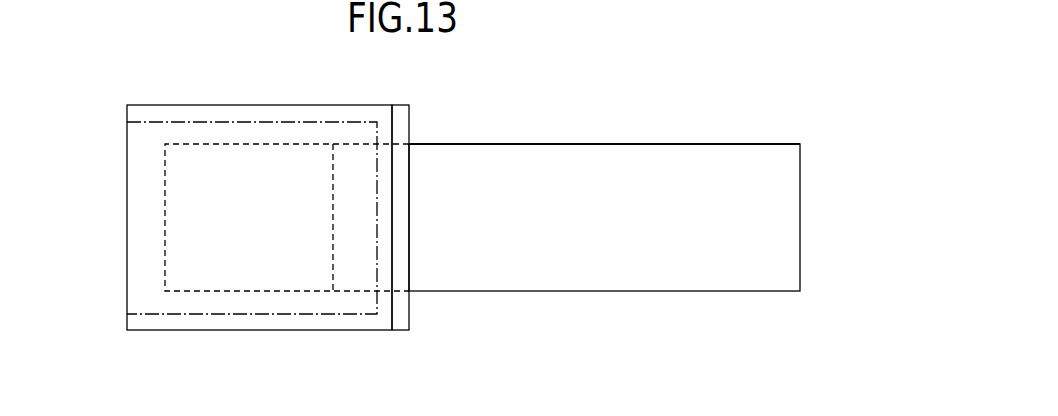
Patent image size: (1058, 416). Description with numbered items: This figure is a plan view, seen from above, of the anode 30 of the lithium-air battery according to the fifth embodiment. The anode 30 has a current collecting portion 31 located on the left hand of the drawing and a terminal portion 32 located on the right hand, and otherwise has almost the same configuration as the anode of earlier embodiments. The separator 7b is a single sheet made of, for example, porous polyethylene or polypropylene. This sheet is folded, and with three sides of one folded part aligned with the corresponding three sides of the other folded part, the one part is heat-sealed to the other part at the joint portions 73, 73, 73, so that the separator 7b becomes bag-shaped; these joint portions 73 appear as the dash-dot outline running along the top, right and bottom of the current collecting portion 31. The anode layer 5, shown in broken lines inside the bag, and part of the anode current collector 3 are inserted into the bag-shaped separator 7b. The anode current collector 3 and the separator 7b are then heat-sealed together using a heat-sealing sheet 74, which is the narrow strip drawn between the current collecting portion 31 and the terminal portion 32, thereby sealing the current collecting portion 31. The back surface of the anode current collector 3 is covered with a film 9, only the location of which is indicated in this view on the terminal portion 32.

The anode 30 is at (735, 104).
The current collecting portion 31 is at (408, 338).
The terminal portion 32 is at (797, 338).
The anode current collector 3 is at (573, 157).
The film 9 is at (642, 157).
The anode layer 5 is at (243, 255).
The separator 7b is at (152, 213).
The joint portion 73 is at (207, 113).
The heat-sealing sheet 74 is at (400, 123).